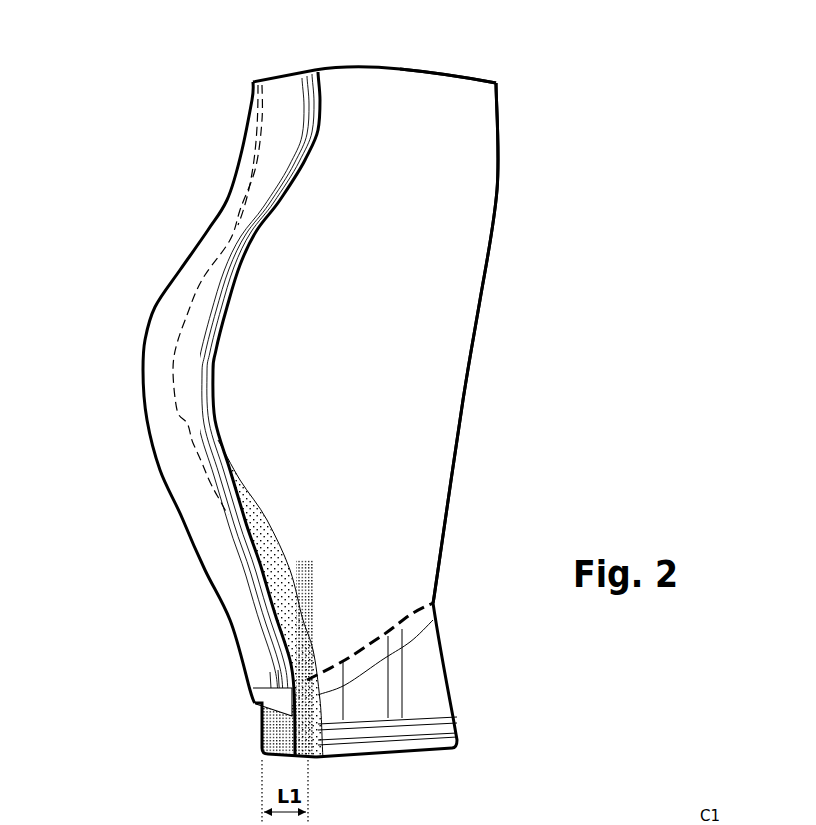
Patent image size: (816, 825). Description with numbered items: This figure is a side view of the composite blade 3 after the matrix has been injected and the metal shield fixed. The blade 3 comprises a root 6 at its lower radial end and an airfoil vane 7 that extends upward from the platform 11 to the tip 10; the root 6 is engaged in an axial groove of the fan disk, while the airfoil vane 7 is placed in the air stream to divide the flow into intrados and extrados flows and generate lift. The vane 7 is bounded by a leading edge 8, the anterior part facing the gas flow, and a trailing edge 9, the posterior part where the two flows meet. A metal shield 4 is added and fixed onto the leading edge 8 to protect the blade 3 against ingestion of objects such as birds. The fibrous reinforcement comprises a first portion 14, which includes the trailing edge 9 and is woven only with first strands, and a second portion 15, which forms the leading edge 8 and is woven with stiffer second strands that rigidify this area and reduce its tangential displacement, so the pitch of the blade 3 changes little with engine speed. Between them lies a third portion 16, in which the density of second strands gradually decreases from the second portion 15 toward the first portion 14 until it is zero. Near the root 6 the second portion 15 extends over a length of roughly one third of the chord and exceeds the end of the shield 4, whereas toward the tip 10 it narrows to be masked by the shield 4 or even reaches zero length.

The blade 3 is at (592, 120).
The tip 10 is at (473, 73).
The airfoil vane 7 is at (269, 417).
The first portion 14 is at (447, 237).
The trailing edge 9 is at (477, 345).
The metal shield 4 is at (162, 372).
The leading edge 8 is at (183, 521).
The second portion 15 is at (274, 629).
The third portion 16 is at (297, 660).
The platform 11 is at (402, 628).
The root 6 is at (443, 740).